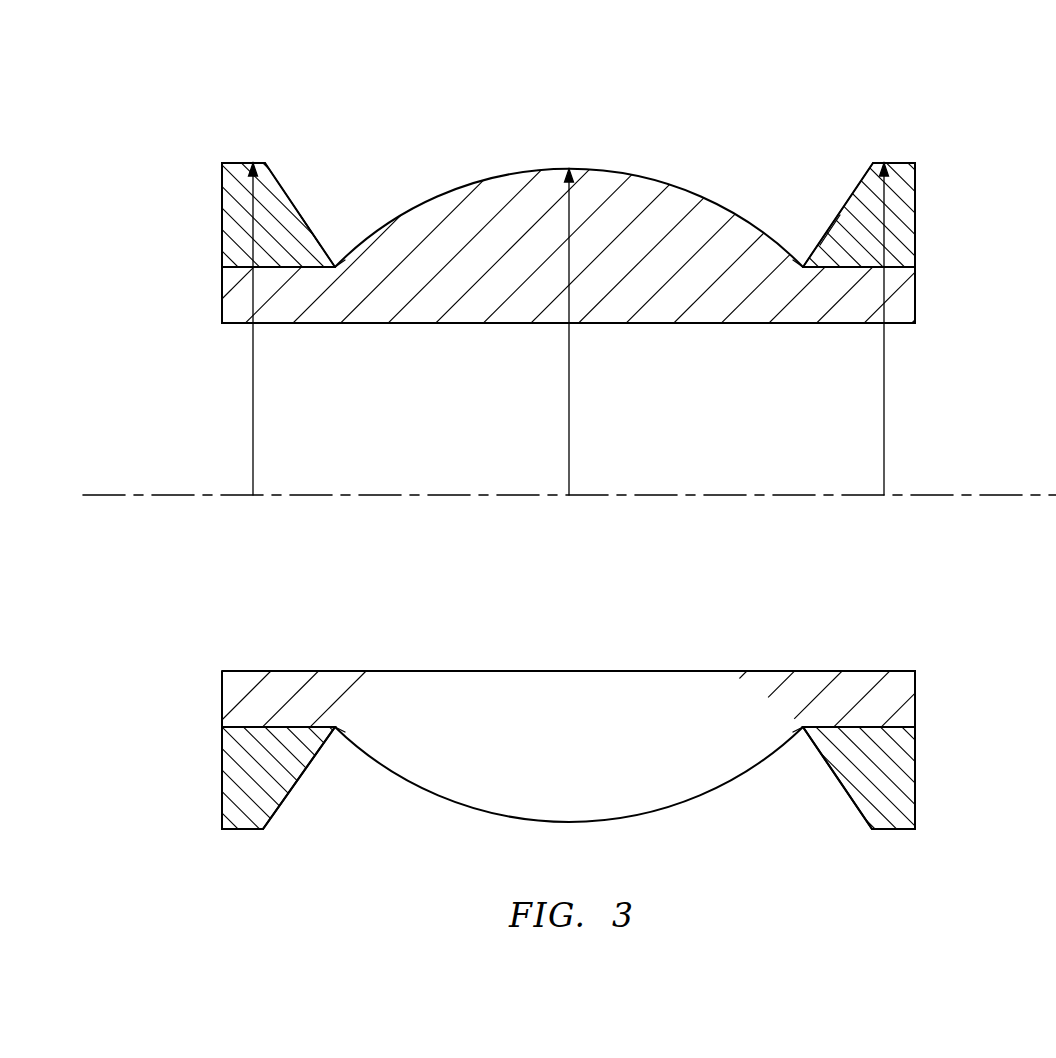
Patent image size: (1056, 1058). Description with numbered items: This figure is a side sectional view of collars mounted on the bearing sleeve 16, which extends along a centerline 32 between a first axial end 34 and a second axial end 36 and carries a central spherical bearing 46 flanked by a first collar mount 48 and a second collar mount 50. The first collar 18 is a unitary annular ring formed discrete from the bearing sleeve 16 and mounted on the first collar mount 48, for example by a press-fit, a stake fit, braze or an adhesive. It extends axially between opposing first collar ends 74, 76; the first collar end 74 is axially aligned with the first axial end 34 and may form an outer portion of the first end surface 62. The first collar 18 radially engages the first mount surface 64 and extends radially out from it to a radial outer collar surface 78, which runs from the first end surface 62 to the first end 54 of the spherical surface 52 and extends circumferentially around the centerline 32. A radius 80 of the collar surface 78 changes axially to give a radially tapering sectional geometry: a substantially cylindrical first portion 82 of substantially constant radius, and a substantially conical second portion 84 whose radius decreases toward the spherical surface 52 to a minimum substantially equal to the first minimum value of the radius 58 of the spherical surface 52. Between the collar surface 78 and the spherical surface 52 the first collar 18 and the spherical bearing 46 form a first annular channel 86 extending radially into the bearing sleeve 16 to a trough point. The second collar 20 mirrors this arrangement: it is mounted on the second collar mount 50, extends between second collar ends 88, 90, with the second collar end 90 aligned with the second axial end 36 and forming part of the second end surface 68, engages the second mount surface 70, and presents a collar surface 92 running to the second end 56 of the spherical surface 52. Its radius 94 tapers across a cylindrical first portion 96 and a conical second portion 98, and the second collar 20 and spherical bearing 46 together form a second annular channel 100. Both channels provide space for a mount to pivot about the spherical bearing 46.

The bearing sleeve 16 is at (569, 477).
The first collar 18 is at (250, 148).
The second collar 20 is at (898, 137).
The centerline 32 is at (1034, 497).
The first axial end 34 is at (503, 295).
The second axial end 36 is at (981, 295).
The spherical bearing 46 is at (546, 338).
The first collar mount 48 is at (303, 338).
The second collar mount 50 is at (816, 336).
The spherical surface 52 is at (492, 180).
The first end of the spherical surface 54 is at (372, 219).
The second end of the spherical surface 56 is at (769, 219).
The radius 58 is at (569, 391).
The first end surface 62 is at (222, 298).
The first mount surface 64 is at (237, 267).
The second end surface 68 is at (915, 297).
The second mount surface 70 is at (910, 252).
The first collar end 74 is at (222, 202).
The first collar end 76 is at (336, 262).
The collar surface 78 is at (287, 180).
The radius 80 is at (253, 432).
The first portion 82 is at (230, 162).
The second portion 84 is at (294, 200).
The first annular channel 86 is at (338, 765).
The second collar end 88 is at (915, 202).
The second collar end 90 is at (803, 262).
The collar surface 92 is at (854, 175).
The radius 94 is at (884, 413).
The first portion 96 is at (917, 163).
The second portion 98 is at (845, 198).
The second annular channel 100 is at (800, 765).